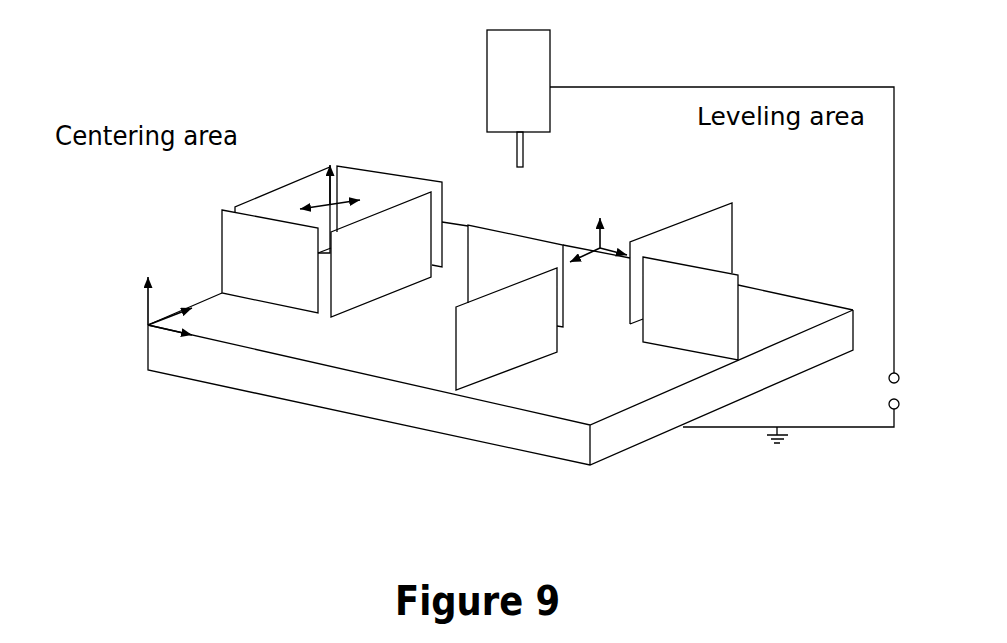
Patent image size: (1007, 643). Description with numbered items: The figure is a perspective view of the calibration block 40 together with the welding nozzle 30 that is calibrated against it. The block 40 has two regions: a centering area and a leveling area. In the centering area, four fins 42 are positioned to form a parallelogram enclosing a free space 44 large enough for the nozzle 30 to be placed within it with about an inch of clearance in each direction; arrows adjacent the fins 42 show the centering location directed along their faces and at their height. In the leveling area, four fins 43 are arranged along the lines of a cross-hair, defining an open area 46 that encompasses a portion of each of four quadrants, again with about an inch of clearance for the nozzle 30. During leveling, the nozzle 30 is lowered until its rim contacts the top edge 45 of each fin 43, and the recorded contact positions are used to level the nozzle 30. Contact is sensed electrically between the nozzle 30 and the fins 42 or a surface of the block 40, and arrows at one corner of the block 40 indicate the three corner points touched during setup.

The nozzle 30 is at (550, 42).
The calibration block 40 is at (467, 425).
The fins 42 is at (232, 245).
The fins 43 is at (710, 242).
The free space 44 is at (383, 196).
The top edge 45 is at (703, 210).
The free area 46 is at (628, 231).